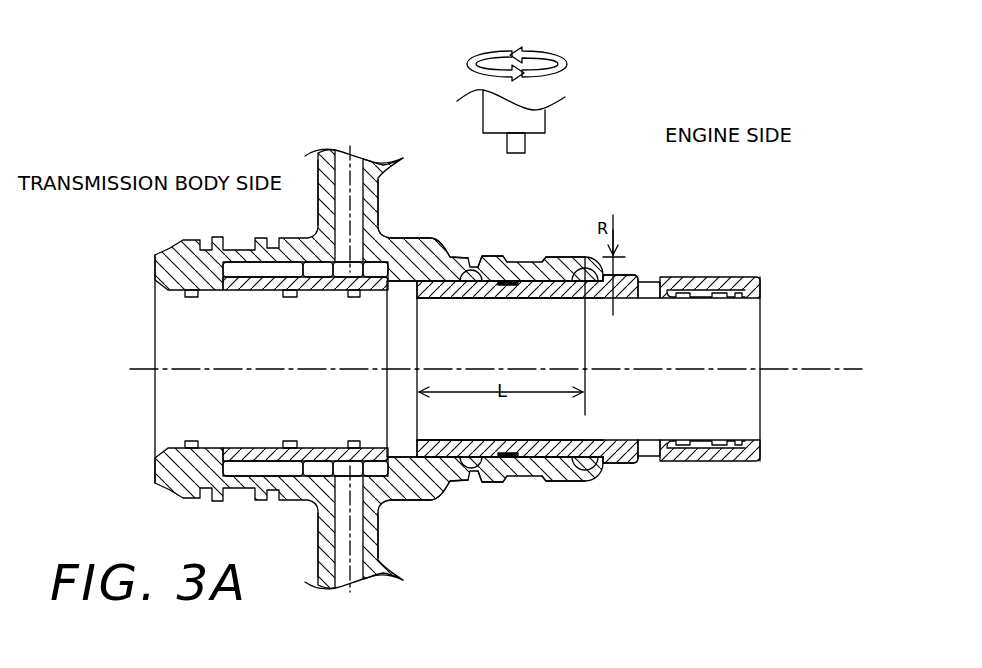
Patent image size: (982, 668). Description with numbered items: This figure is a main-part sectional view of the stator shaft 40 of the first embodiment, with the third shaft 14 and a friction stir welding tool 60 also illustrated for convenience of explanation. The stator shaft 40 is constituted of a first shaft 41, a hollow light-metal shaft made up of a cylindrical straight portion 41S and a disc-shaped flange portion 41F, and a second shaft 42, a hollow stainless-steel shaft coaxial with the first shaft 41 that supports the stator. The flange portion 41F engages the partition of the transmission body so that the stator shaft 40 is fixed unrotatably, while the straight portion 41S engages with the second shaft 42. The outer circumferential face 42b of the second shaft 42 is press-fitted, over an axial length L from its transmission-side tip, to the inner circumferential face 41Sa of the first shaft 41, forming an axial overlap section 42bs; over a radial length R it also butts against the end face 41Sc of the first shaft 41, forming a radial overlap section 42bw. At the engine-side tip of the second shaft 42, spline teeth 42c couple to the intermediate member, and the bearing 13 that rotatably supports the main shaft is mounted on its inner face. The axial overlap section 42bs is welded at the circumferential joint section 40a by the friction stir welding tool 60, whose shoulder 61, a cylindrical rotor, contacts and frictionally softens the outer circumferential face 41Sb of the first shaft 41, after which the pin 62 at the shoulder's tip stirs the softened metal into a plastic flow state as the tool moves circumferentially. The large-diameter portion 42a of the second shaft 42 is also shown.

The stator shaft 40 is at (414, 63).
The joint section 40a is at (510, 288).
The first shaft 41 is at (468, 160).
The flange portion 41F is at (397, 186).
The straight portion 41S is at (427, 250).
The inner circumferential face 41Sa is at (405, 283).
The outer circumferential face 41Sb is at (479, 236).
The end face 41Sc is at (593, 256).
The second shaft 42 is at (684, 233).
The large diameter portion 42a is at (602, 300).
The outer circumferential face 42b is at (627, 275).
The axial overlap section 42bs is at (465, 282).
The radial overlap section 42bw is at (578, 282).
The spline teeth 42c is at (723, 277).
The bearing 13 is at (715, 302).
The third shaft 14 is at (253, 288).
The friction stir welding tool 60 is at (605, 131).
The shoulder 61 is at (545, 118).
The pin 62 is at (525, 143).